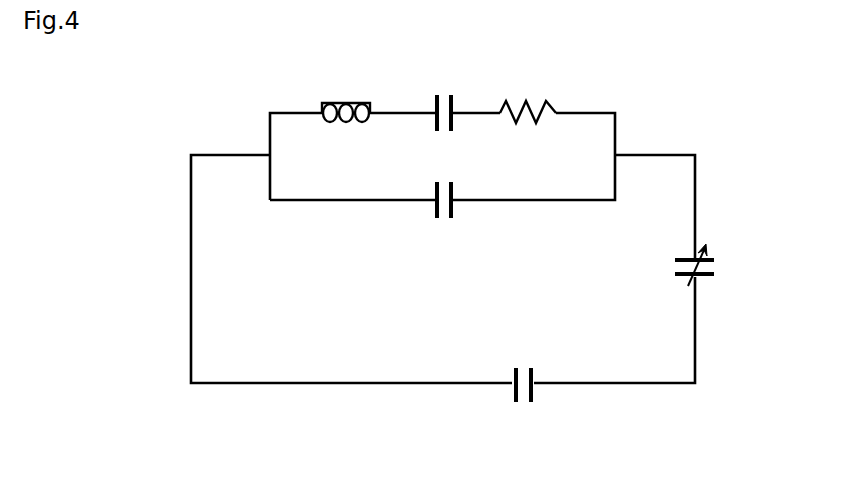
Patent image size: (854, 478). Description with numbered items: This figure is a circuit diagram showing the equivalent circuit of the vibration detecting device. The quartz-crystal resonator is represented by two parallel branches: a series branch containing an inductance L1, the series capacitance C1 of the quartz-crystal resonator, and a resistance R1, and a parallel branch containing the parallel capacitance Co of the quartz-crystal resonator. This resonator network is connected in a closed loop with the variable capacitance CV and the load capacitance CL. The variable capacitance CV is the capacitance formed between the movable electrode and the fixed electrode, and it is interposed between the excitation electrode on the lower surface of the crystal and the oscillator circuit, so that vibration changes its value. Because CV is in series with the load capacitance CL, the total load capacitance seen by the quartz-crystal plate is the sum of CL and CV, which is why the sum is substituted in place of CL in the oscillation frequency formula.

The inductor L1 is at (352, 100).
The series capacitance C1 is at (455, 102).
The resistor R1 is at (528, 100).
The parallel capacitance Co is at (435, 205).
The variable capacitance CV is at (700, 278).
The load capacitance CL is at (534, 395).